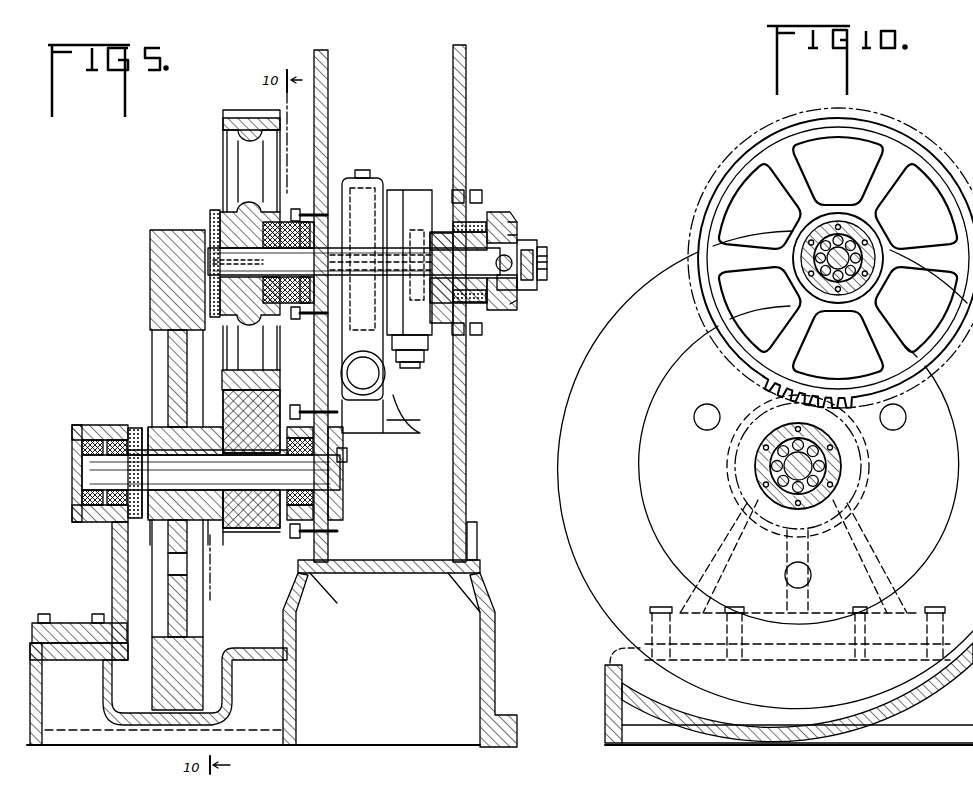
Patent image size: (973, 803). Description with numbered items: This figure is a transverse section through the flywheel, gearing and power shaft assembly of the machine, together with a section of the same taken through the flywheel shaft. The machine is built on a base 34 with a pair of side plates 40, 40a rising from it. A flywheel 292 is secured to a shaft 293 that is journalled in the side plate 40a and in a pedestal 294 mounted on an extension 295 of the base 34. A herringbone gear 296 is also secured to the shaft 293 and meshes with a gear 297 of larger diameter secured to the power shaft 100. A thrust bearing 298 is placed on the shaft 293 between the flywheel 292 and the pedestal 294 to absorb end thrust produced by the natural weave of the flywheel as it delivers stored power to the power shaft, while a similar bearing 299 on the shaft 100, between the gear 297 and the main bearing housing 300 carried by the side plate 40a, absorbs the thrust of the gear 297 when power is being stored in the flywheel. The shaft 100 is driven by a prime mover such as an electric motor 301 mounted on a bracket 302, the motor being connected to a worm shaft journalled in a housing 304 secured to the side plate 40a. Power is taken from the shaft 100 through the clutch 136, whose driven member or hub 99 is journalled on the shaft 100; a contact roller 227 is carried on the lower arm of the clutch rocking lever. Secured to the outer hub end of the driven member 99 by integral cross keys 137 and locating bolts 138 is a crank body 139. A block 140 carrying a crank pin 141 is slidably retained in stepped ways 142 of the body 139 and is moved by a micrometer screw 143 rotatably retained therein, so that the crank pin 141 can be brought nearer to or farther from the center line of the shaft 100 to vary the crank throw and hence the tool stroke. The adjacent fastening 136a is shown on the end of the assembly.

In FIG. 9, the base 34 is at (498, 655).
In FIG. 9, the side plate 40 is at (466, 64).
In FIG. 9, the side plate 40a is at (328, 78).
In FIG. 9, the driven member 99 is at (493, 310).
In FIG. 9, the power shaft 100 is at (495, 215).
In FIG. 10, the power shaft 100 is at (868, 259).
In FIG. 9, the clutch 136 is at (416, 190).
In FIG. 9, the screw 136a is at (548, 285).
In FIG. 9, the cross keys 137 is at (517, 222).
In FIG. 9, the locating bolts 138 is at (517, 236).
In FIG. 9, the crank body 139 is at (508, 216).
In FIG. 9, the block 140 is at (517, 292).
In FIG. 9, the crank pin 141 is at (540, 258).
In FIG. 9, the stepped ways 142 is at (518, 305).
In FIG. 9, the micrometer screw 143 is at (510, 260).
In FIG. 9, the contact roller 227 is at (418, 368).
In FIG. 9, the flywheel 292 is at (162, 230).
In FIG. 10, the flywheel 292 is at (556, 512).
In FIG. 9, the shaft 293 is at (213, 493).
In FIG. 10, the shaft 293 is at (852, 464).
In FIG. 9, the pedestal 294 is at (112, 545).
In FIG. 9, the extension 295 is at (32, 686).
In FIG. 10, the extension 295 is at (610, 692).
In FIG. 9, the herringbone gear 296 is at (270, 533).
In FIG. 10, the herringbone gear 296 is at (838, 417).
In FIG. 9, the gear 297 is at (244, 112).
In FIG. 10, the gear 297 is at (760, 384).
In FIG. 9, the thrust bearing 298 is at (140, 425).
In FIG. 9, the bearing 299 is at (283, 312).
In FIG. 9, the main bearing housing 300 is at (308, 208).
In FIG. 9, the electric motor 301 is at (405, 388).
In FIG. 9, the bracket 302 is at (425, 433).
In FIG. 9, the housing 304 is at (375, 175).